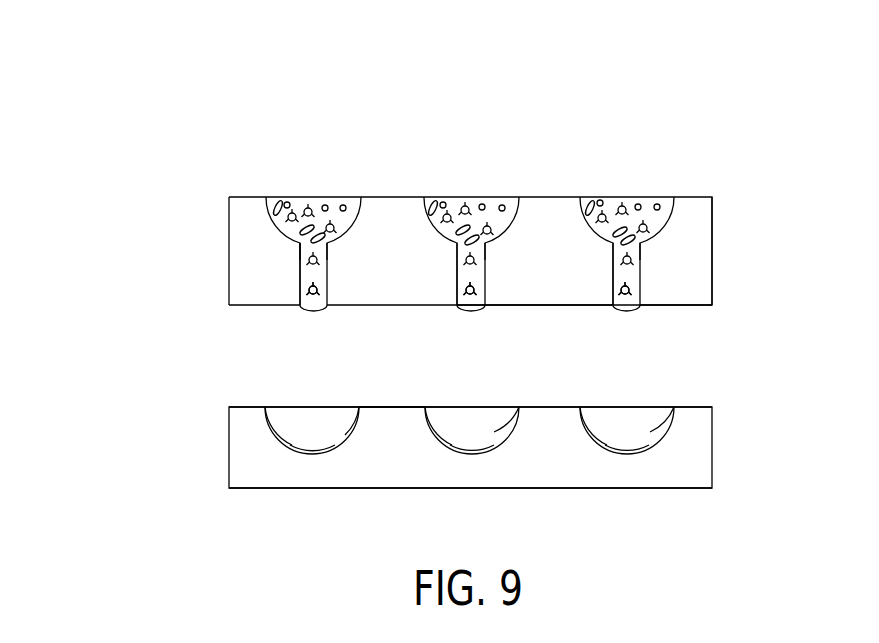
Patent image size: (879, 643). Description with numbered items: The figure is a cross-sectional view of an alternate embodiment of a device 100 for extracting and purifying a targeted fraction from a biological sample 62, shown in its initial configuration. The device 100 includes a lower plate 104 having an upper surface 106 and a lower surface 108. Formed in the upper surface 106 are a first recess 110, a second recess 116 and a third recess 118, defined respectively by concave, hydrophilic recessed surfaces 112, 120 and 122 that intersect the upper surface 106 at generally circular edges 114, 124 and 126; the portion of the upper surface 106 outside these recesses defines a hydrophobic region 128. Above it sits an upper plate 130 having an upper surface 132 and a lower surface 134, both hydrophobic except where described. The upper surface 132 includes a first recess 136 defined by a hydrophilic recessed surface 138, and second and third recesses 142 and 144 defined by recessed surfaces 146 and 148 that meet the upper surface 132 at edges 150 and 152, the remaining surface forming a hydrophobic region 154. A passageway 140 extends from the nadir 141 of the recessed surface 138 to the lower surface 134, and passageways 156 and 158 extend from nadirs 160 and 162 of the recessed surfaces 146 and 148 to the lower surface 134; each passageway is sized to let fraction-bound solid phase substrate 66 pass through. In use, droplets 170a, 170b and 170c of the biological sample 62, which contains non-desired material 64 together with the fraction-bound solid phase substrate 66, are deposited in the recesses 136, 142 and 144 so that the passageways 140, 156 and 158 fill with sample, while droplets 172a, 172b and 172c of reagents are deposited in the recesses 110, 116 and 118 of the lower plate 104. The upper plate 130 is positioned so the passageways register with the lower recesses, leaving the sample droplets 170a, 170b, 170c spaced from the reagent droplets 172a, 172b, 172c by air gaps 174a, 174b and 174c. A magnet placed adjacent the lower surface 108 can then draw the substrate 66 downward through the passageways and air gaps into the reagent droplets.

The biological sample 62 is at (357, 197).
The non-desired material 64 is at (273, 197).
The fraction-bound solid phase substrate 66 is at (335, 197).
The device 100 is at (181, 331).
The lower plate 104 is at (229, 406).
The upper surface of lower plate 106 is at (245, 407).
The lower surface of lower plate 108 is at (230, 488).
The first recess 110 is at (341, 406).
The recessed surface 112 is at (345, 435).
The edge 114 is at (345, 435).
The second recess 116 is at (498, 406).
The third recess 118 is at (657, 406).
The recessed surface 120 is at (494, 432).
The recessed surface 122 is at (650, 432).
The edge 124 is at (494, 432).
The edge 126 is at (650, 432).
The hydrophobic region 128 is at (398, 407).
The upper plate 130 is at (224, 195).
The upper surface of upper plate 132 is at (712, 197).
The lower surface of upper plate 134 is at (230, 305).
The first recess 136 is at (288, 193).
The recessed surface 138 is at (338, 233).
The passageway 140 is at (362, 196).
The nadir 141 is at (300, 252).
The second recess 142 is at (471, 195).
The third recess 144 is at (622, 195).
The recessed surface 146 is at (432, 207).
The recessed surface 148 is at (668, 213).
The edge 150 is at (516, 197).
The edge 152 is at (581, 197).
The hydrophobic region 154 is at (695, 197).
The passageway 156 is at (466, 290).
The passageway 158 is at (615, 288).
The nadir 160 is at (487, 243).
The nadir 162 is at (642, 243).
The droplet 170a is at (303, 197).
The droplet 170b is at (457, 197).
The droplet 170c is at (610, 197).
The droplet 172a is at (292, 420).
The droplet 172b is at (463, 430).
The droplet 172c is at (620, 430).
The air gap 174a is at (337, 344).
The air gap 174b is at (450, 344).
The air gap 174c is at (642, 344).